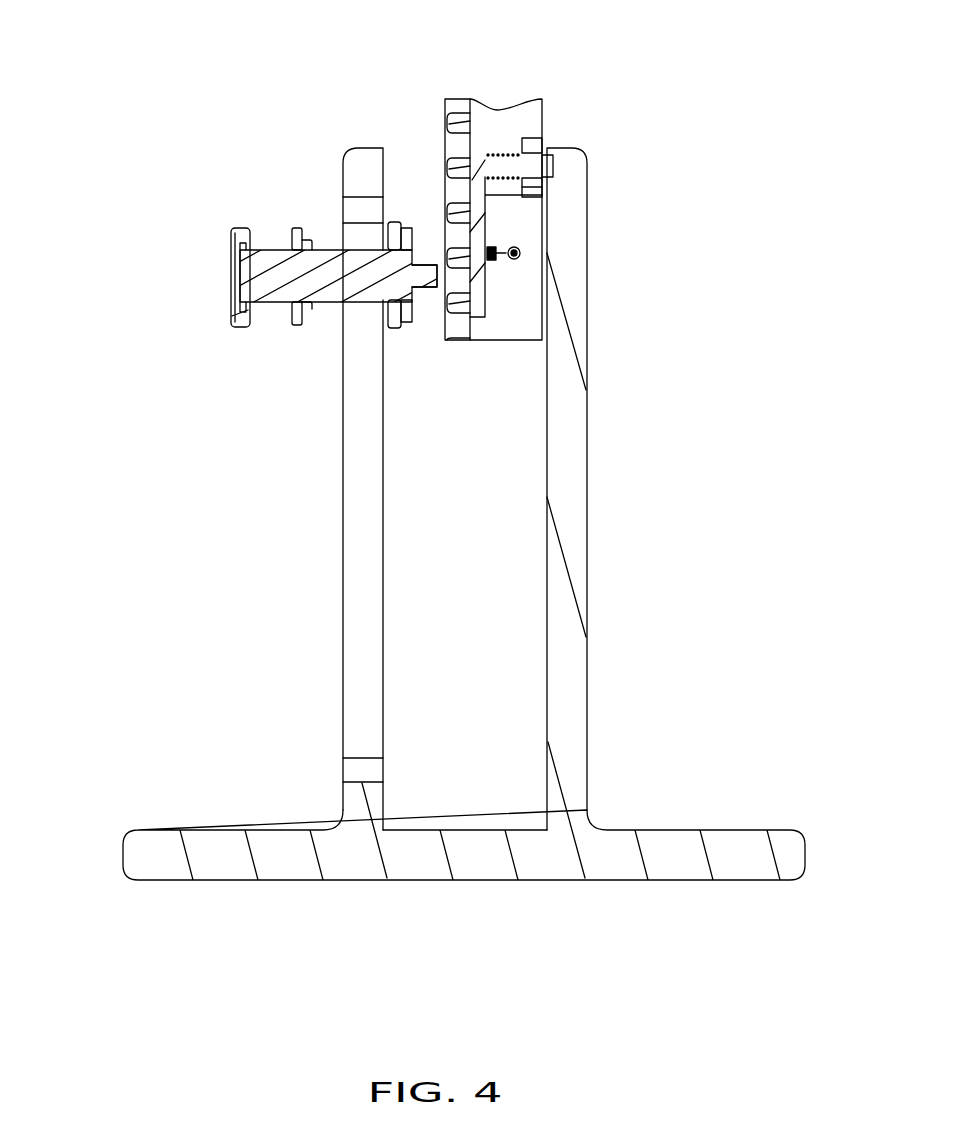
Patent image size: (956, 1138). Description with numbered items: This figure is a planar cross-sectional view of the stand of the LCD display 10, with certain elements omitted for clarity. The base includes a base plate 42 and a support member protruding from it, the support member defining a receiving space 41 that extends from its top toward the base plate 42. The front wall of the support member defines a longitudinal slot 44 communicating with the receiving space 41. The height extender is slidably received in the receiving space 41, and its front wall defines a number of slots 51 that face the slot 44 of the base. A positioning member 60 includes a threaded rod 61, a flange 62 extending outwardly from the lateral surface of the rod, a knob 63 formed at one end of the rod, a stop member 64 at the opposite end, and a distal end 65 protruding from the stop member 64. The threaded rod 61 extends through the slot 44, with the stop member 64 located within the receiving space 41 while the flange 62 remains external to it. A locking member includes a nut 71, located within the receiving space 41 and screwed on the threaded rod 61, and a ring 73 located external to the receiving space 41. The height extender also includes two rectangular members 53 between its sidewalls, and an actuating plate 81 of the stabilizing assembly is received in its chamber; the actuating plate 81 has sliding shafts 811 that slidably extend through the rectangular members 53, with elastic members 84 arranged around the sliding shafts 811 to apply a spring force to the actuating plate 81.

The LCD display 10 is at (181, 68).
The receiving space 41 is at (495, 500).
The base plate 42 is at (670, 852).
The longitudinal slot 44 is at (367, 533).
The slots 51 is at (460, 145).
The rectangular members 53 is at (537, 141).
The positioning member 60 is at (355, 80).
The threaded rod 61 is at (310, 249).
The flange 62 is at (300, 228).
The knob 63 is at (242, 227).
The stop member 64 is at (406, 228).
The distal end 65 is at (430, 272).
The nut 71 is at (397, 318).
The ring 73 is at (294, 322).
The actuating plate 81 is at (477, 298).
The sliding shafts 811 is at (530, 163).
The elastic members 84 is at (502, 181).